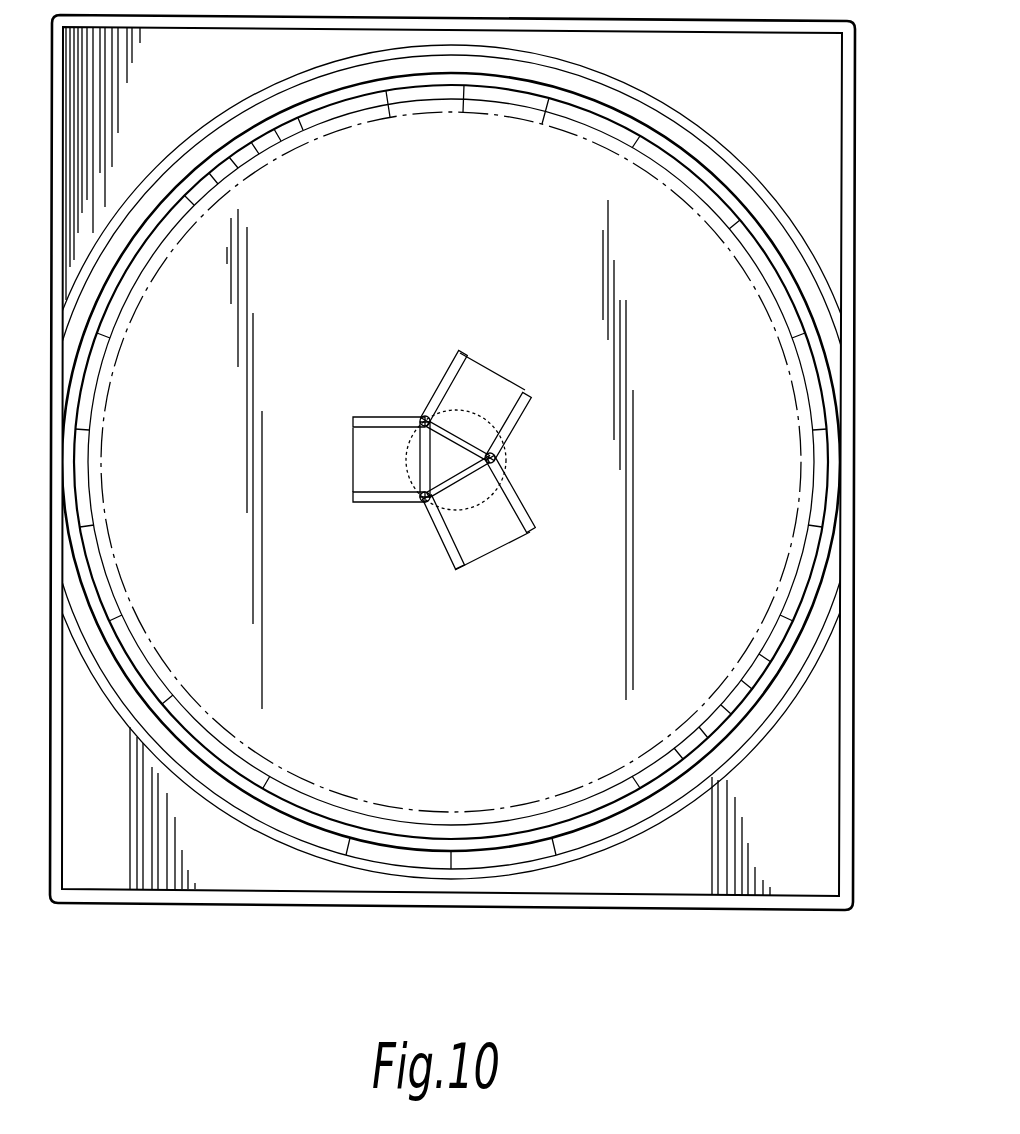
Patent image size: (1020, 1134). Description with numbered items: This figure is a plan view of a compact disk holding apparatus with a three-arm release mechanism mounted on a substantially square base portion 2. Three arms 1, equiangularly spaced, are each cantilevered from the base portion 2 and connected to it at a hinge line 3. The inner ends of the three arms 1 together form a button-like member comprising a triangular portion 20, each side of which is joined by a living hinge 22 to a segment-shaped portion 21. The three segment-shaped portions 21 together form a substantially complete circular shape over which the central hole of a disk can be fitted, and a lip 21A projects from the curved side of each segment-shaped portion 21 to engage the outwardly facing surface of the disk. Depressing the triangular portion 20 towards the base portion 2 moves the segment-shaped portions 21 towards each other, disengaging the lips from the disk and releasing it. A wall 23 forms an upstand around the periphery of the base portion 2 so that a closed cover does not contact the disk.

The arm 1 is at (387, 435).
The base portion 2 is at (106, 856).
The hinge line 3 is at (513, 382).
The triangular portion 20 is at (497, 453).
The segment-shaped portion 21 is at (442, 410).
The lip 21A is at (483, 410).
The living hinge 22 is at (423, 418).
The wall 23 is at (848, 117).